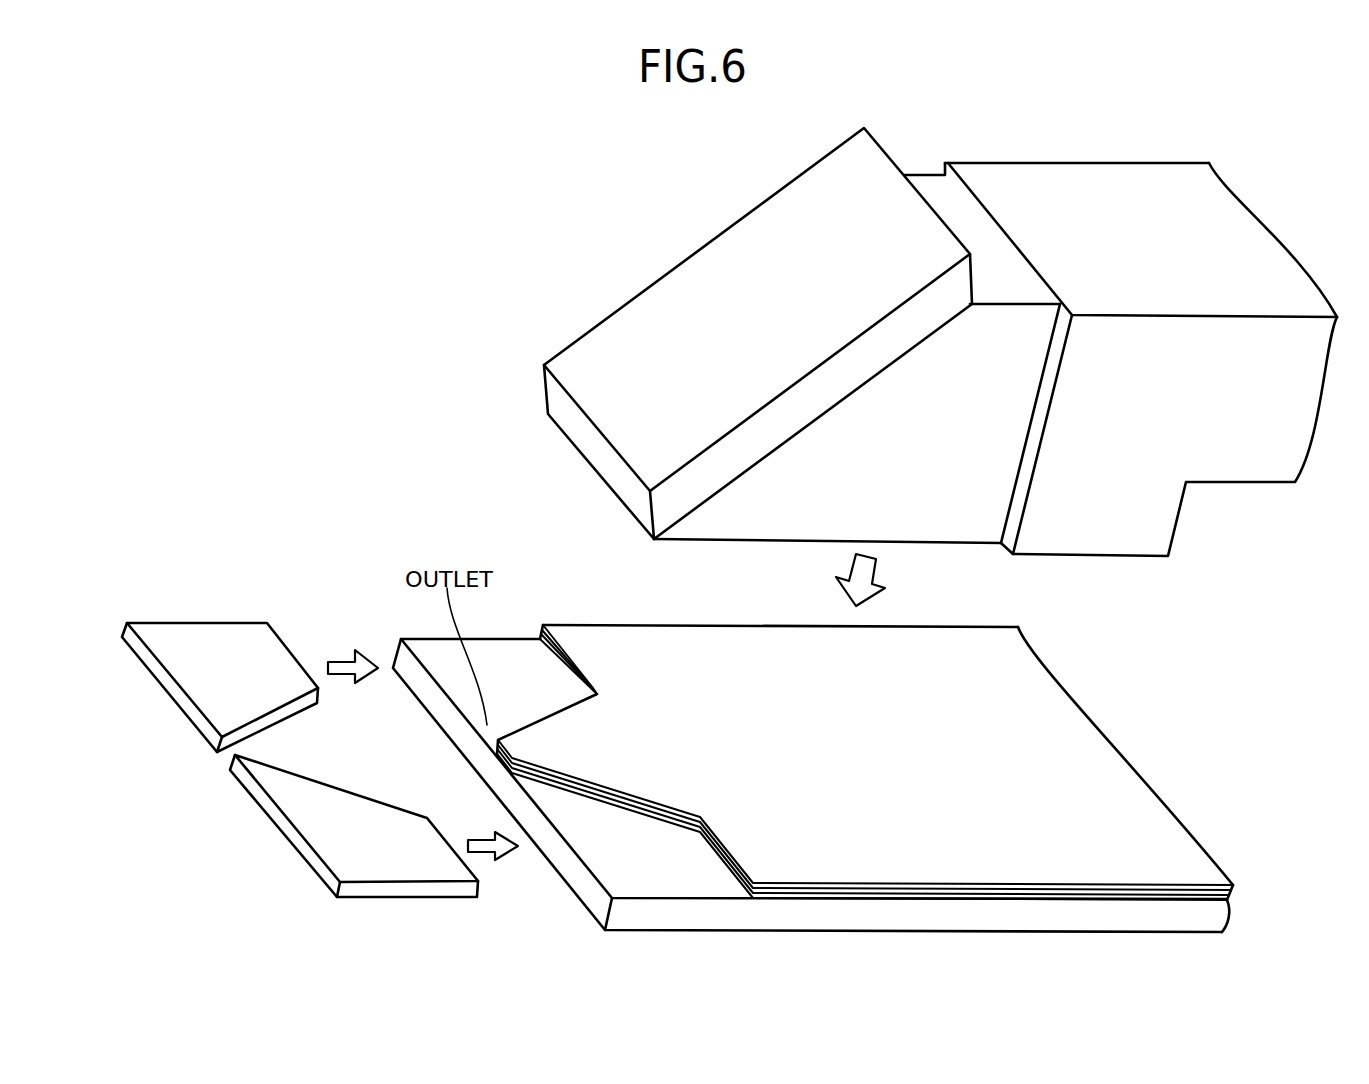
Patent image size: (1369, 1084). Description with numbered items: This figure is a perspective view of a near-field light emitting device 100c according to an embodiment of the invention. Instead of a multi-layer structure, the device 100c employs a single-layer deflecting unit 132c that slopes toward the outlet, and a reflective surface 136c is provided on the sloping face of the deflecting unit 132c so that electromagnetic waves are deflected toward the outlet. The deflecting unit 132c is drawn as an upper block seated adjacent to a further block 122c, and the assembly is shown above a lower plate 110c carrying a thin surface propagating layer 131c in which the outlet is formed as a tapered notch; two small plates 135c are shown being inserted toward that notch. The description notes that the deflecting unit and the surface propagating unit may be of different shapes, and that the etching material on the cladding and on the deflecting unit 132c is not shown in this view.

The near-field light emitting device 100c is at (1240, 167).
The reflective surface 136c is at (679, 282).
The deflecting unit 132c is at (757, 528).
The housing block 122c is at (1152, 520).
The laminated layer 131c is at (1118, 790).
The base plate 110c is at (600, 908).
The insert plates 135c is at (263, 797).